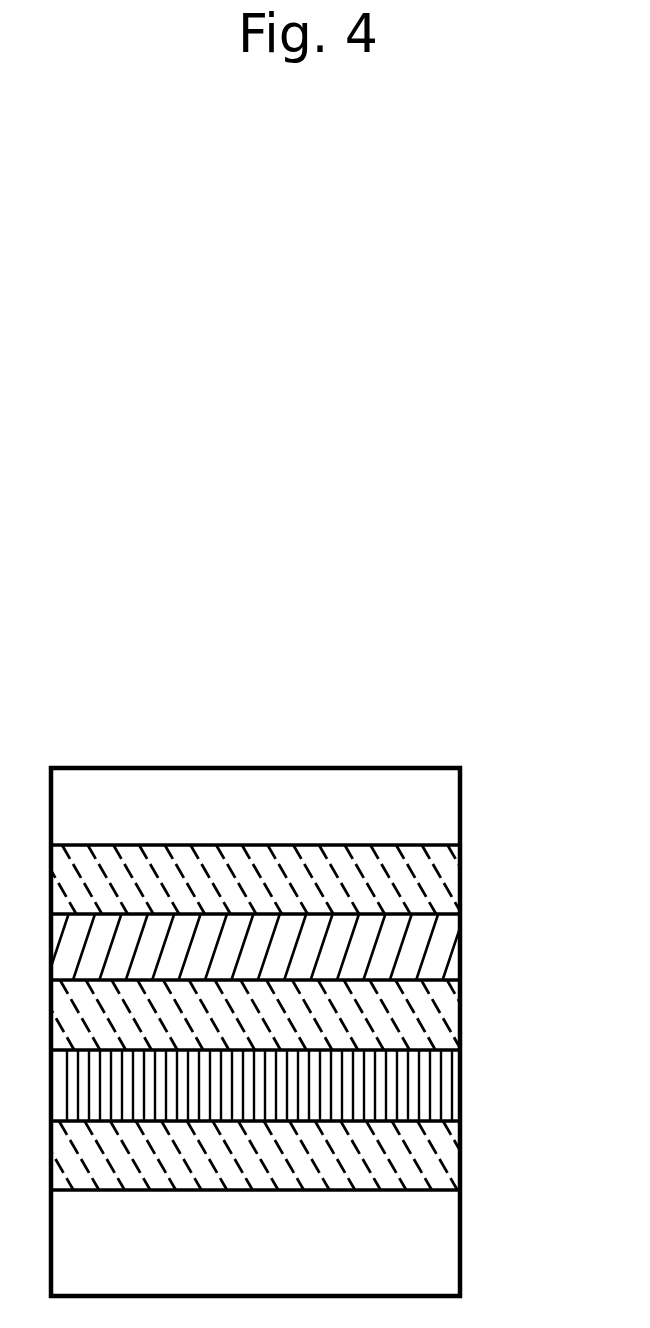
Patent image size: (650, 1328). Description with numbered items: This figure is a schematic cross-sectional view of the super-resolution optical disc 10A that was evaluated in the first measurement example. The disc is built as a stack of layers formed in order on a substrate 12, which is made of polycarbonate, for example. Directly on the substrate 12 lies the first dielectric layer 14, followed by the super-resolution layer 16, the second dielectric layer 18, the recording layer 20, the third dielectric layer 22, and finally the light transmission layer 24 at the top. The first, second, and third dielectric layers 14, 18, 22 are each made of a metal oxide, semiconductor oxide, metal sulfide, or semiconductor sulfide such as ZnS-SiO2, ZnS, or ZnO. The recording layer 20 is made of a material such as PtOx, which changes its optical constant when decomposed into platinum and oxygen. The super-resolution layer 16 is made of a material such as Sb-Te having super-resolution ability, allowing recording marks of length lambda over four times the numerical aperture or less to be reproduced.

The super-resolution optical disc 10A is at (247, 758).
The substrate 12 is at (441, 1230).
The first dielectric layer 14 is at (440, 1147).
The super-resolution layer 16 is at (443, 1075).
The second dielectric layer 18 is at (445, 998).
The recording layer 20 is at (445, 942).
The third dielectric layer 22 is at (445, 857).
The light transmission layer 24 is at (445, 792).